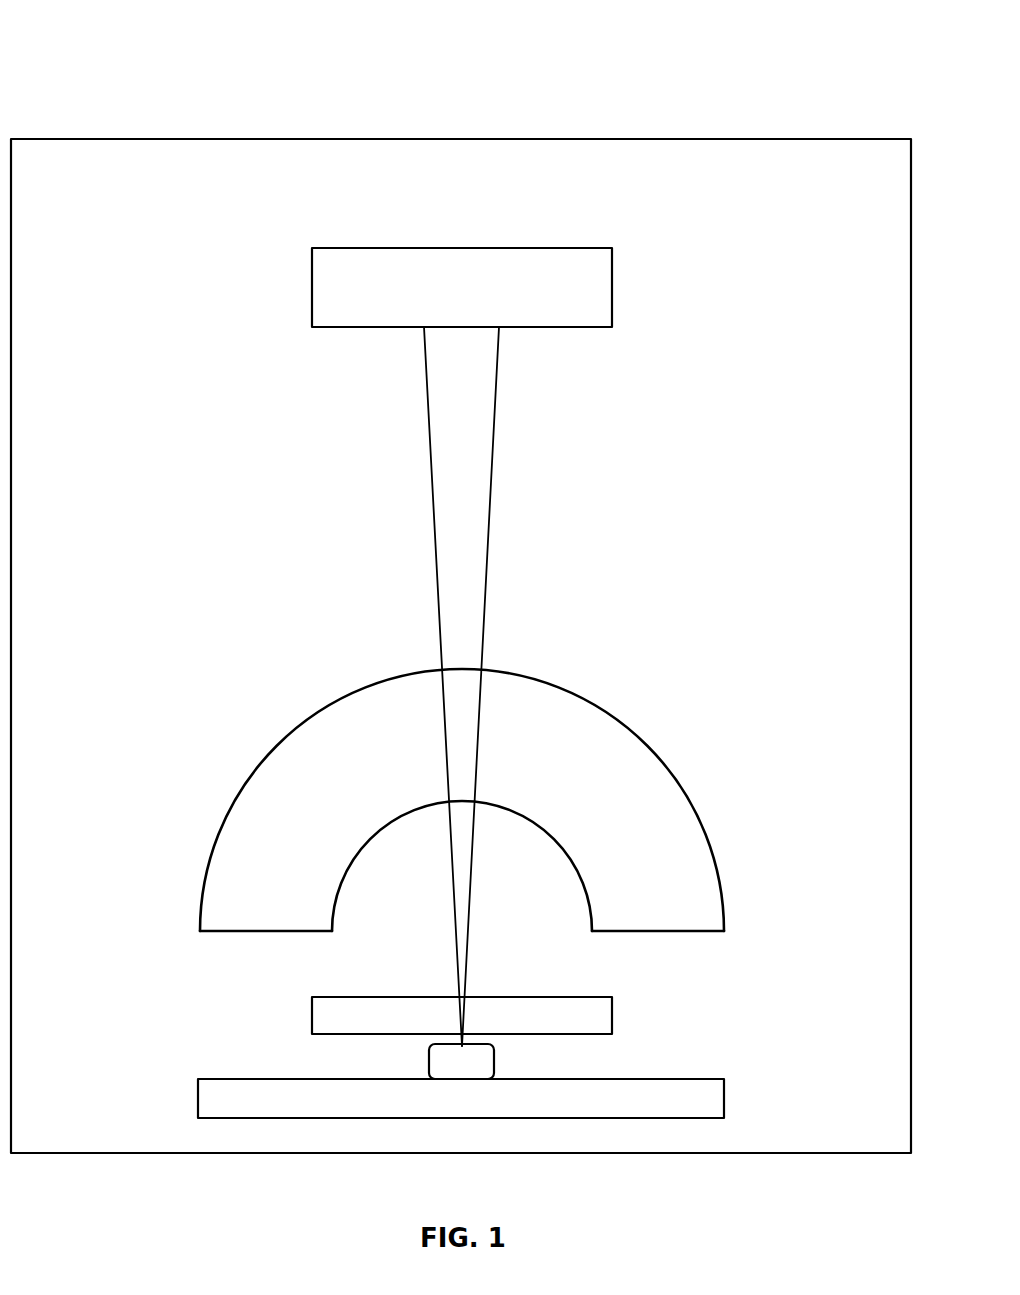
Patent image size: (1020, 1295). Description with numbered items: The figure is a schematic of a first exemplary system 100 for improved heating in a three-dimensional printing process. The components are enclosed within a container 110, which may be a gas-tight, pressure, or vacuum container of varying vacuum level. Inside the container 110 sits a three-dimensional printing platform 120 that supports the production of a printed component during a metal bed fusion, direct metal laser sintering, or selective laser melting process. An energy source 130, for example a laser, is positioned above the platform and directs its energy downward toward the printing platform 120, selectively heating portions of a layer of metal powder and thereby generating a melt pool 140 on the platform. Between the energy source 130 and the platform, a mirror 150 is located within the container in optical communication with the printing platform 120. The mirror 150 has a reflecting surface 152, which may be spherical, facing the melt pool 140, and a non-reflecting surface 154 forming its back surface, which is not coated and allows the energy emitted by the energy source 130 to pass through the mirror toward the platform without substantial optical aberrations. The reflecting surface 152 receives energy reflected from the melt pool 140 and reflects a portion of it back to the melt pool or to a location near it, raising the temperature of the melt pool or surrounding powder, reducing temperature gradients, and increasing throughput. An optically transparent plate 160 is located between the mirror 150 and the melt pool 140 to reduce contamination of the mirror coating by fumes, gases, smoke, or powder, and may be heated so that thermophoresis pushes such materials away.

The system 100 is at (170, 34).
The container 110 is at (314, 119).
The 3D printing platform 120 is at (738, 1102).
The energy source 130 is at (457, 235).
The melt pool 140 is at (512, 1064).
The mirror 150 is at (648, 944).
The reflecting surface 152 is at (522, 828).
The non-reflecting surface 154 is at (260, 758).
The optically transparent plate 160 is at (293, 1014).